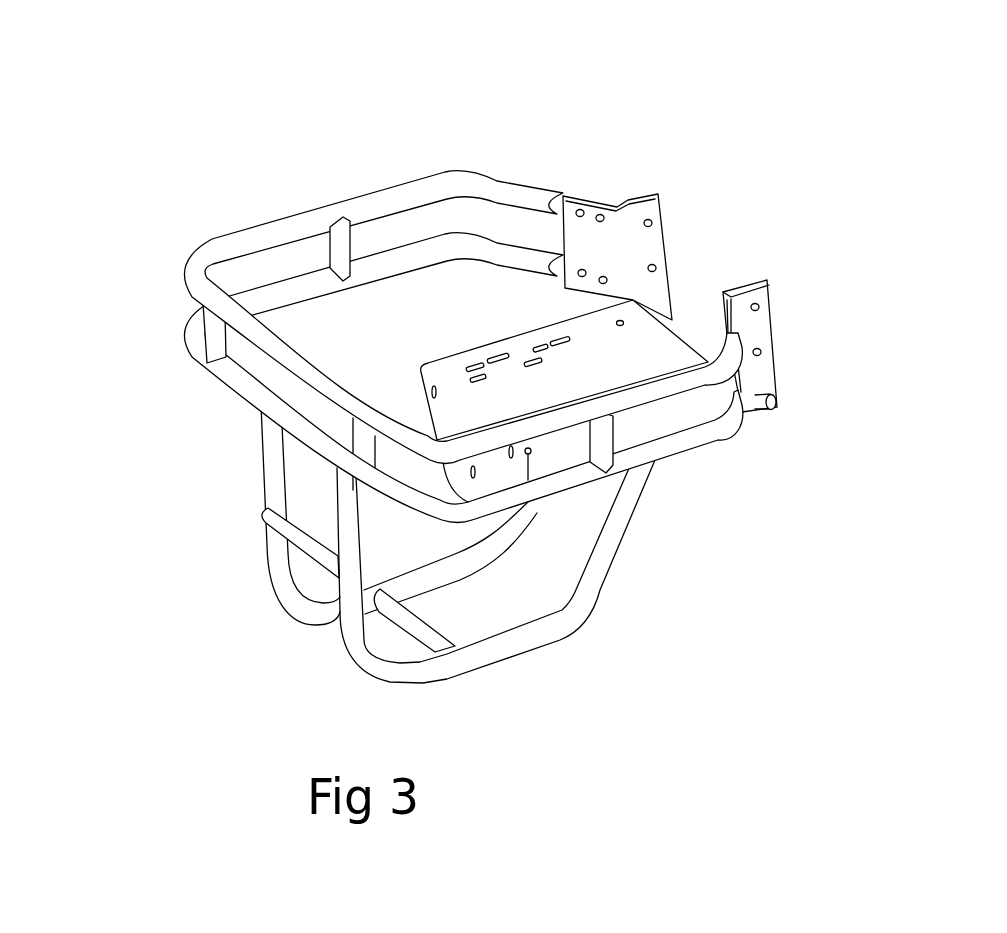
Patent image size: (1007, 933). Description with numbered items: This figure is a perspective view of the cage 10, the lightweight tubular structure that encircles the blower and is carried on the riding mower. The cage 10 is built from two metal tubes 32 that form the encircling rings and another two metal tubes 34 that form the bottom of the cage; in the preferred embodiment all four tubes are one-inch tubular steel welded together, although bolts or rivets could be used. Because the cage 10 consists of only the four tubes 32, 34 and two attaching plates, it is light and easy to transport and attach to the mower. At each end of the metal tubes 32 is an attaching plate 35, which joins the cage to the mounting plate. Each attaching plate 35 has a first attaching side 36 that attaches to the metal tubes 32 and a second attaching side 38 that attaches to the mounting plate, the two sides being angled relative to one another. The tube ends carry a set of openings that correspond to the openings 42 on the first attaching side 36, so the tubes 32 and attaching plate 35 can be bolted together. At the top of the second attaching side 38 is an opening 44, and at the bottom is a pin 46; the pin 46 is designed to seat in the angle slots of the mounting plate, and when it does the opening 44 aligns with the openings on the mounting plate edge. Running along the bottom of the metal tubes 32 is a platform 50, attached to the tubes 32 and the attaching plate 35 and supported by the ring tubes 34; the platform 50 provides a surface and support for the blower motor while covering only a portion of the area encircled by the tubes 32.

The cage 10 is at (244, 475).
The metal tubes 32 is at (197, 337).
The metal tubes 34 is at (585, 587).
The attaching plate 35 is at (688, 207).
The first attaching side 36 is at (582, 252).
The second attaching side 38 is at (645, 205).
The openings 42 is at (587, 221).
The opening 44 is at (758, 307).
The pin 46 is at (775, 404).
The platform 50 is at (667, 413).